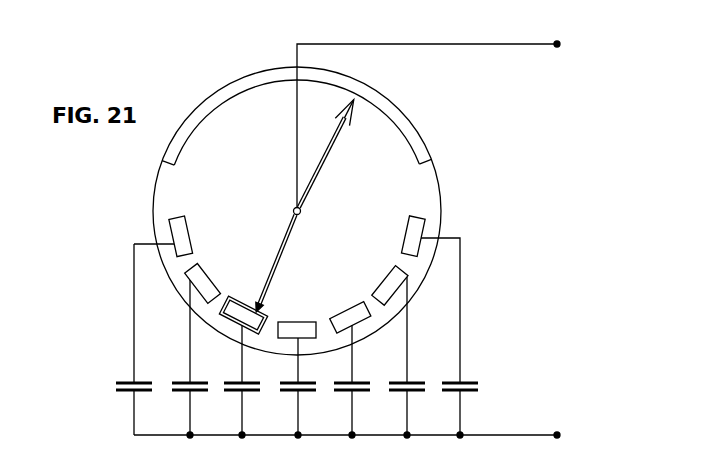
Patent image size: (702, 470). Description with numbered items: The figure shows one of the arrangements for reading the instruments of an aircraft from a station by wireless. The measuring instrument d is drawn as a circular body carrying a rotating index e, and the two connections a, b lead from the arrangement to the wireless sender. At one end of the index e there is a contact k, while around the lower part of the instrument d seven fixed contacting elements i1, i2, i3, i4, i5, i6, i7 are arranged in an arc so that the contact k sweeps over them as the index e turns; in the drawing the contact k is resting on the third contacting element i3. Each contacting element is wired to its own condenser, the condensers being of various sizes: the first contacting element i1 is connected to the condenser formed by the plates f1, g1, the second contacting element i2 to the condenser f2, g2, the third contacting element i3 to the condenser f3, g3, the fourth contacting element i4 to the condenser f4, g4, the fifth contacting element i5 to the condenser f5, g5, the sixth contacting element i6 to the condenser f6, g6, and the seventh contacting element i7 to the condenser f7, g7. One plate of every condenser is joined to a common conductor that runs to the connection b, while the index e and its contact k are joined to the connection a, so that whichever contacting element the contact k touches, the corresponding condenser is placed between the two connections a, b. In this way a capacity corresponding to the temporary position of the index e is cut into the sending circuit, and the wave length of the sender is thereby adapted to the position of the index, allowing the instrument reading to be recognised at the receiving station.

The measuring instrument d is at (432, 183).
The connection to the sender a is at (437, 119).
The connection to the sender b is at (356, 434).
The index e is at (323, 165).
The contact k is at (255, 315).
The fixed contacting element i1 is at (186, 231).
The fixed contacting element i2 is at (198, 273).
The fixed contacting element i3 is at (228, 308).
The fixed contacting element i4 is at (303, 324).
The fixed contacting element i5 is at (336, 316).
The fixed contacting element i6 is at (396, 270).
The fixed contacting element i7 is at (418, 225).
The condenser plate f1 is at (120, 313).
The condenser plate g1 is at (129, 399).
The condenser plate f2 is at (176, 341).
The condenser plate g2 is at (185, 399).
The condenser plate f3 is at (228, 361).
The condenser plate g3 is at (237, 399).
The condenser plate f4 is at (284, 366).
The condenser plate g4 is at (293, 399).
The condenser plate f5 is at (338, 361).
The condenser plate g5 is at (347, 399).
The condenser plate f6 is at (393, 341).
The condenser plate g6 is at (402, 399).
The condenser plate f7 is at (446, 321).
The condenser plate g7 is at (455, 399).